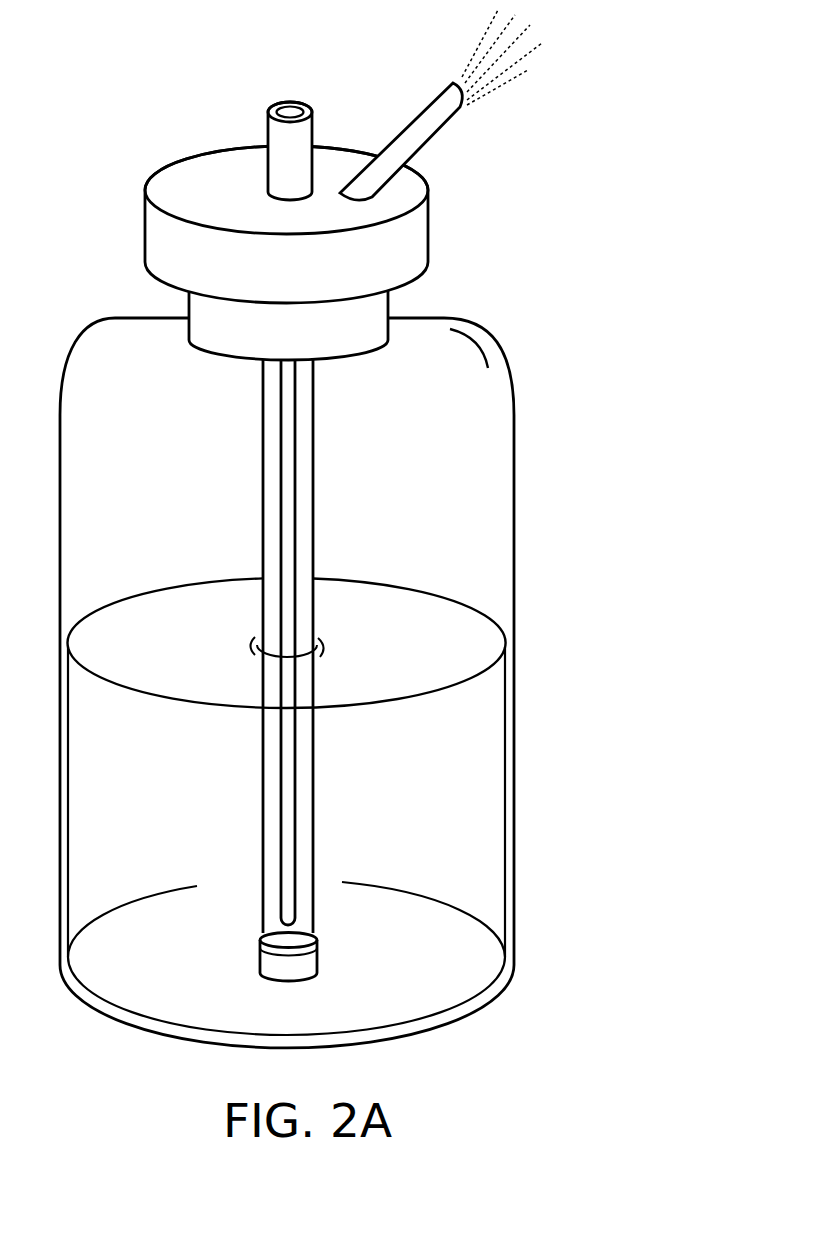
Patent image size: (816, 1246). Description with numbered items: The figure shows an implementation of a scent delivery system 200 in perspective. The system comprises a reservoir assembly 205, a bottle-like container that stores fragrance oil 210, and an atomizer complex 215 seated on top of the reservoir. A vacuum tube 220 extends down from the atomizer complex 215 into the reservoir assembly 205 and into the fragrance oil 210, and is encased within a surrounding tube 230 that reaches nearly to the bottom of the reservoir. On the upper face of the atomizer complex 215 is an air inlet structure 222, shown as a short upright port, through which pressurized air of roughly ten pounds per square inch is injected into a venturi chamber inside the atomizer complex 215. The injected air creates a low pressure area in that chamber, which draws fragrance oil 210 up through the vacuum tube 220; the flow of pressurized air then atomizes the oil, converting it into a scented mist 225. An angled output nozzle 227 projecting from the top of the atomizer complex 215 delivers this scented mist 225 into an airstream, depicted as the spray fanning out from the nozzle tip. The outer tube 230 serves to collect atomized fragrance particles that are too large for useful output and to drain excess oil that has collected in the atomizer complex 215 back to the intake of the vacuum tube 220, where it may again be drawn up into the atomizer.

The scent delivery system 200 is at (172, 87).
The reservoir assembly 205 is at (486, 463).
The fragrance oil 210 is at (462, 815).
The atomizer complex 215 is at (413, 246).
The vacuum tube 220 is at (296, 456).
The air inlet structure 222 is at (292, 102).
The scented mist 225 is at (500, 82).
The output nozzle 227 is at (438, 97).
The tube 230 is at (314, 549).